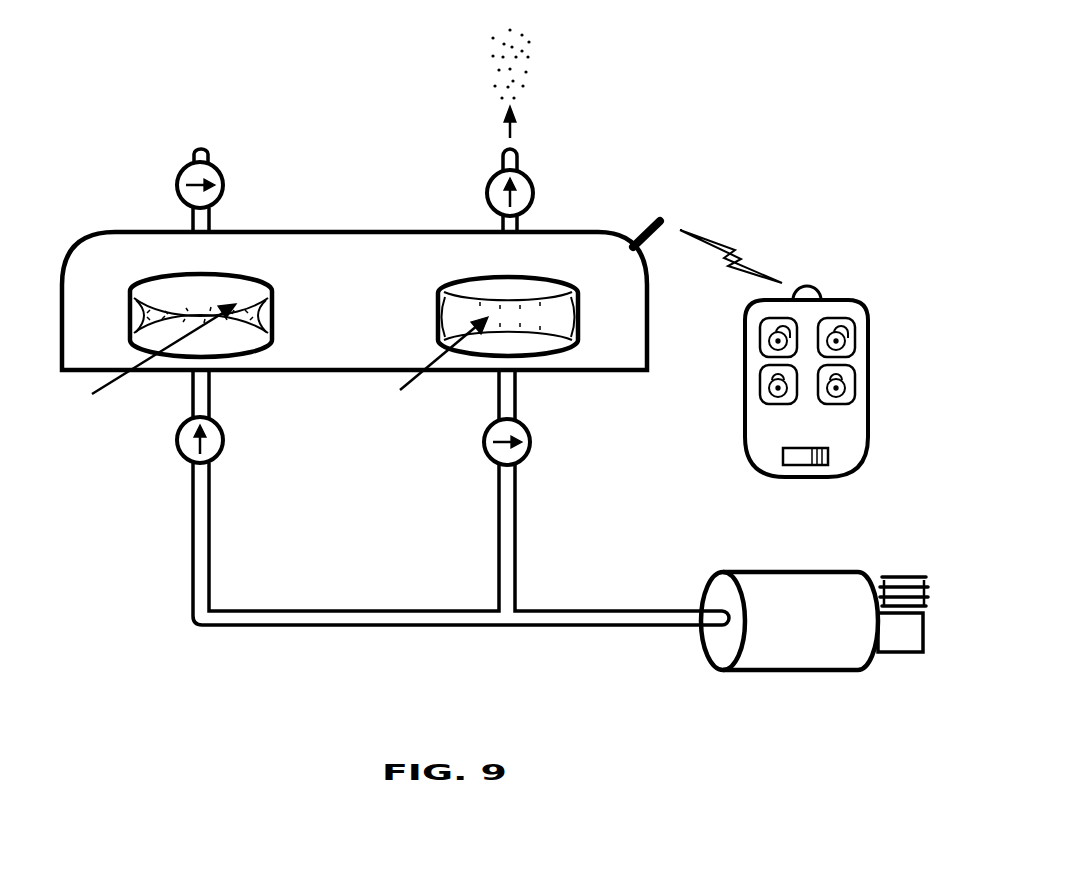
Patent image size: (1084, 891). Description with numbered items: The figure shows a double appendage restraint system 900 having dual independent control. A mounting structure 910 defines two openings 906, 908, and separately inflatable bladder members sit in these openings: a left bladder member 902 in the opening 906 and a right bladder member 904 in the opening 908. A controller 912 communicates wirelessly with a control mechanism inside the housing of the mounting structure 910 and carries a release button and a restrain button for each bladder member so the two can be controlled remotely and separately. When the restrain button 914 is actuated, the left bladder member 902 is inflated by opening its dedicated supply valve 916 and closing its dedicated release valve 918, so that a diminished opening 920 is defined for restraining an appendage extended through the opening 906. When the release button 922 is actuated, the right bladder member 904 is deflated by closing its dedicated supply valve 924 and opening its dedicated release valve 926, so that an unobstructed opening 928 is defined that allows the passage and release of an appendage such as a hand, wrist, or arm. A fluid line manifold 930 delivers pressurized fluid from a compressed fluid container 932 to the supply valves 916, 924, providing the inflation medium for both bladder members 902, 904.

The double appendage restraint system 900 is at (729, 61).
The left bladder member 902 is at (218, 296).
The right bladder member 904 is at (496, 338).
The opening 906 is at (178, 270).
The opening 908 is at (482, 275).
The mounting structure 910 is at (440, 231).
The controller 912 is at (750, 457).
The restrain button 914 is at (760, 386).
The supply valve 916 is at (224, 440).
The release valve 918 is at (224, 186).
The diminished opening 920 is at (153, 367).
The release button 922 is at (856, 337).
The supply valve 924 is at (530, 444).
The release valve 926 is at (533, 196).
The unobstructed opening 928 is at (433, 371).
The fluid line manifold 930 is at (192, 543).
The compressed fluid container 932 is at (779, 572).